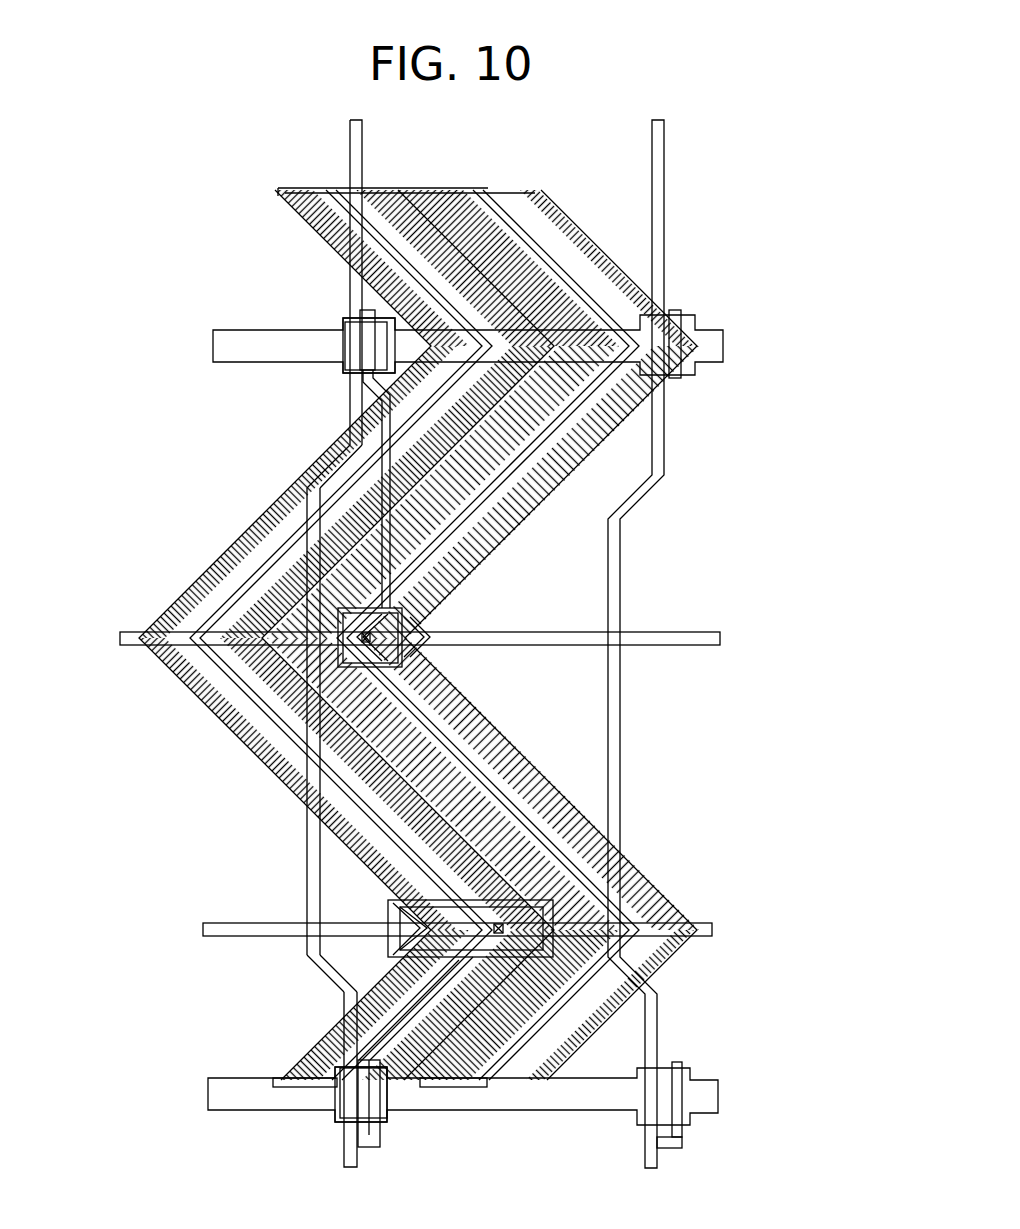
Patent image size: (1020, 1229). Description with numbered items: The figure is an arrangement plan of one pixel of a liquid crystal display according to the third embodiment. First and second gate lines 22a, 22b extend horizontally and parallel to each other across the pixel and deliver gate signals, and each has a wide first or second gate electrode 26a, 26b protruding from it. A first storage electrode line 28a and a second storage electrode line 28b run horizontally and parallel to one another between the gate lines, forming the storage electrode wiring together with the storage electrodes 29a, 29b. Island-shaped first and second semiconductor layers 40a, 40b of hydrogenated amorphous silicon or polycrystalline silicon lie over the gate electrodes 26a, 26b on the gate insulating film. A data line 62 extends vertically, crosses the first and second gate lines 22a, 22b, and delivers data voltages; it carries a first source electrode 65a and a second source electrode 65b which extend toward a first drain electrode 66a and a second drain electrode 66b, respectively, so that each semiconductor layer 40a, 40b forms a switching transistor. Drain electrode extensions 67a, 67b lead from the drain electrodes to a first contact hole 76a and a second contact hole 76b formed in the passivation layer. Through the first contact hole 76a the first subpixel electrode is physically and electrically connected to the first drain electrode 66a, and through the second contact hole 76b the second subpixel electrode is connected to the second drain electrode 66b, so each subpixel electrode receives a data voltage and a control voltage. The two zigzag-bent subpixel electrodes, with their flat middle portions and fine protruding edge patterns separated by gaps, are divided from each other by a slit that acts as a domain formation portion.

The first gate line 22a is at (232, 328).
The second gate line 22b is at (227, 1113).
The first gate electrode 26a is at (352, 320).
The second gate electrode 26b is at (393, 1113).
The first storage electrode line 28a is at (693, 630).
The second storage electrode line 28b is at (227, 937).
The storage electrode 29a is at (440, 602).
The storage electrode 29b is at (390, 903).
The first semiconductor layer 40a is at (344, 348).
The second semiconductor layer 40b is at (340, 1093).
The data line 62 is at (307, 760).
The first source electrode 65a is at (364, 338).
The second source electrode 65b is at (380, 1097).
The first drain electrode 66a is at (352, 400).
The second drain electrode 66b is at (347, 1017).
The drain electrode extension 67a is at (404, 592).
The drain electrode extension 67b is at (430, 1019).
The first contact hole 76a is at (404, 646).
The second contact hole 76b is at (470, 915).